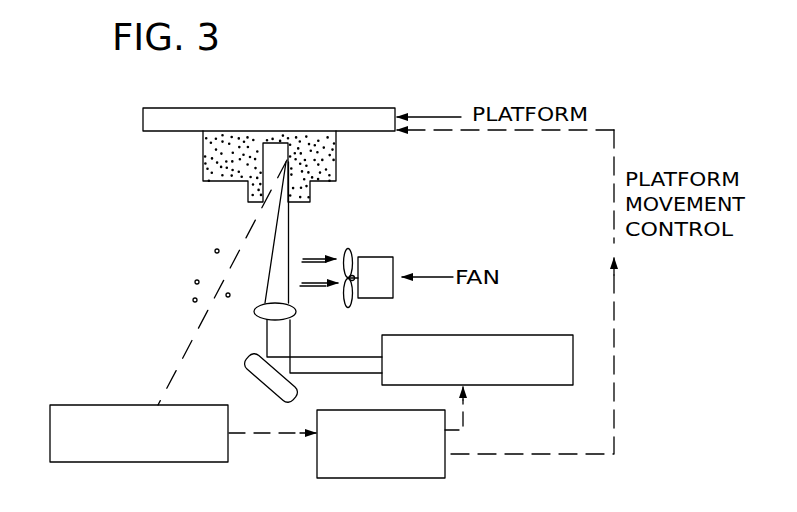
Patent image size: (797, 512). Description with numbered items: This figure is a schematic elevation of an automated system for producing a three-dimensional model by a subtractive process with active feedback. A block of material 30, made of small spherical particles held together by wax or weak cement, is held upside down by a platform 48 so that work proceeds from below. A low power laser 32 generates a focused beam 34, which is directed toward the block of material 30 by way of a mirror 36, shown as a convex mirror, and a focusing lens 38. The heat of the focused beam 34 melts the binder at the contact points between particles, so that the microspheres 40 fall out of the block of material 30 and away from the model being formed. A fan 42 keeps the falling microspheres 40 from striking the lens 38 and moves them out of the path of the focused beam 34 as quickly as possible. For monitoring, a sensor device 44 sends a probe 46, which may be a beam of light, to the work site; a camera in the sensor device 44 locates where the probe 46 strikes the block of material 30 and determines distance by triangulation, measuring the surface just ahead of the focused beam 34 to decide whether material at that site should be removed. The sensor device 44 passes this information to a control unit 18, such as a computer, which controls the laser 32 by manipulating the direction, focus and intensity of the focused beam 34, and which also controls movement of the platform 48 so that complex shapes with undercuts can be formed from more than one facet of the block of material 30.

The control unit 18 is at (323, 410).
The block of material 30 is at (330, 157).
The laser 32 is at (462, 335).
The focused beam 34 is at (290, 222).
The mirror 36 is at (252, 368).
The focusing lens 38 is at (295, 305).
The microspheres 40 is at (216, 247).
The fan 42 is at (387, 257).
The sensor device 44 is at (93, 405).
The probe 46 is at (190, 343).
The platform 48 is at (337, 107).